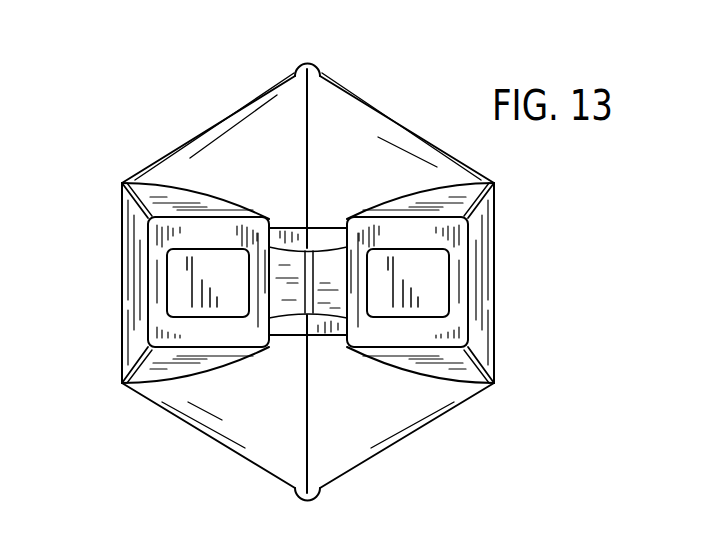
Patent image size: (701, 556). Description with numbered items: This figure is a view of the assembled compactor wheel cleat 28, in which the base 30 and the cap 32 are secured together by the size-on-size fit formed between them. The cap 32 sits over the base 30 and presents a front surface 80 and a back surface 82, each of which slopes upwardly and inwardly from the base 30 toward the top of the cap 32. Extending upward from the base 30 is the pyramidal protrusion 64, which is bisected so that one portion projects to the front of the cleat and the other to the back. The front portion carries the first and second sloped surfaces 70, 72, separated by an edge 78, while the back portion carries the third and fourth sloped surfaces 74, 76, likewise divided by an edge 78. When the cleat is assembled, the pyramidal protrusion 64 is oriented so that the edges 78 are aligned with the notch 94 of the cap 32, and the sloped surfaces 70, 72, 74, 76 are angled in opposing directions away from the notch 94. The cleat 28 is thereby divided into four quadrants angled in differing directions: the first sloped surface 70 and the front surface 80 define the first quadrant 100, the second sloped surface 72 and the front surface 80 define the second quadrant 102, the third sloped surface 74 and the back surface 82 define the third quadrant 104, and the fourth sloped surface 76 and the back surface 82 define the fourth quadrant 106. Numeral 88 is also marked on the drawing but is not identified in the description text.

The cleat 28 is at (125, 122).
The base 30 is at (193, 440).
The cap member 32 is at (112, 263).
The pyramidal protrusion 64 is at (447, 182).
The first sloped surface 70 is at (265, 141).
The second sloped surface 72 is at (329, 141).
The third sloped surface 74 is at (264, 458).
The fourth sloped surface 76 is at (329, 458).
The edge 78 is at (310, 90).
The front surface 80 is at (181, 180).
The back surface 82 is at (170, 384).
The web 88 is at (302, 195).
The notch 94 is at (323, 270).
The first quadrant 100 is at (197, 125).
The second quadrant 102 is at (400, 95).
The third quadrant 104 is at (238, 468).
The fourth quadrant 106 is at (377, 473).